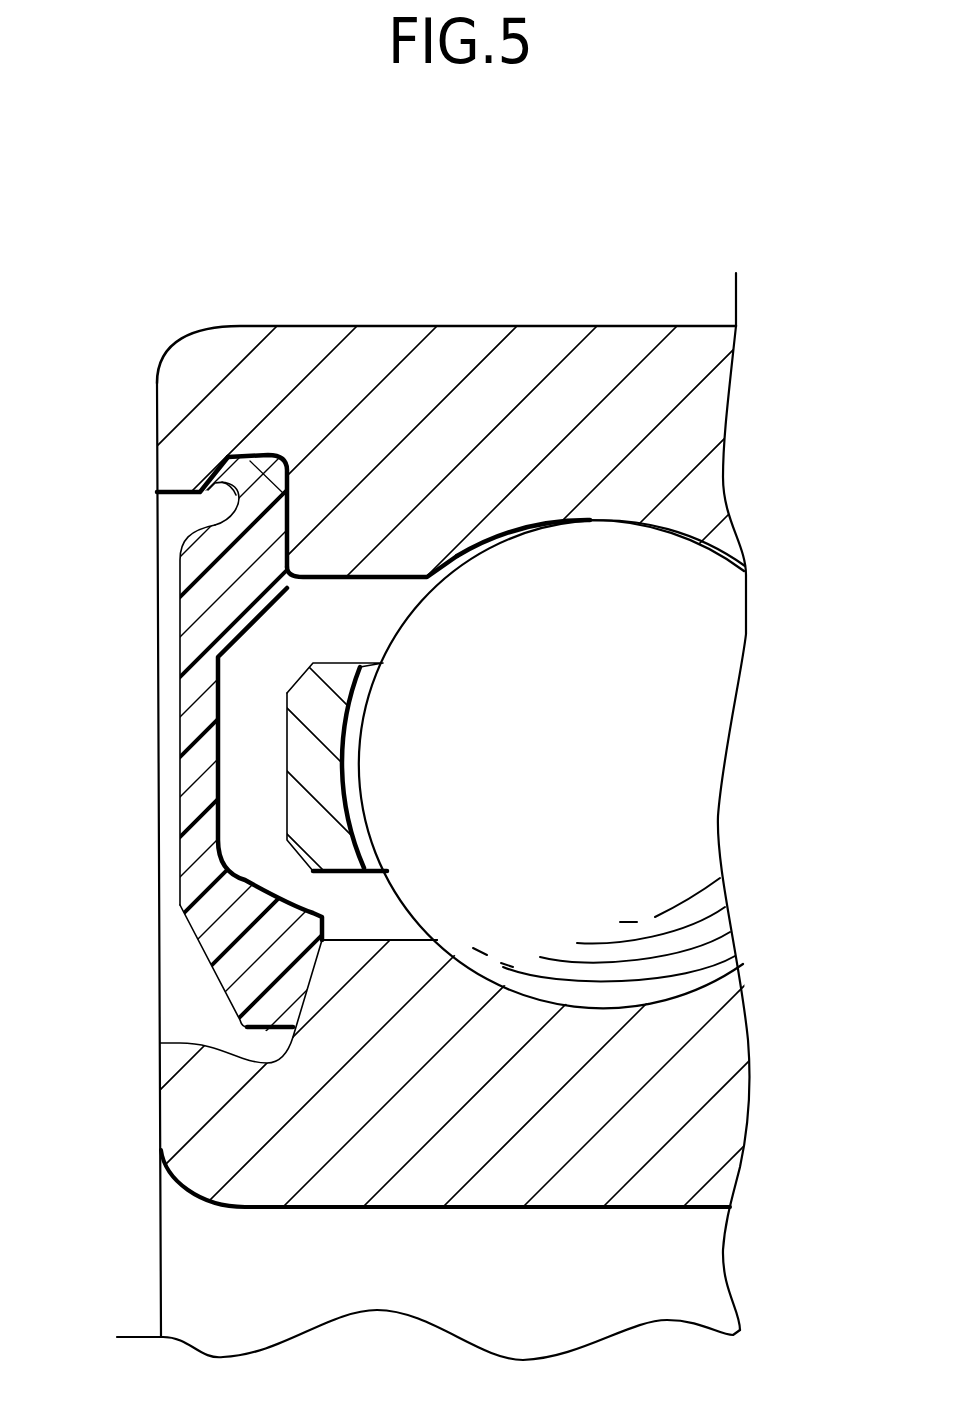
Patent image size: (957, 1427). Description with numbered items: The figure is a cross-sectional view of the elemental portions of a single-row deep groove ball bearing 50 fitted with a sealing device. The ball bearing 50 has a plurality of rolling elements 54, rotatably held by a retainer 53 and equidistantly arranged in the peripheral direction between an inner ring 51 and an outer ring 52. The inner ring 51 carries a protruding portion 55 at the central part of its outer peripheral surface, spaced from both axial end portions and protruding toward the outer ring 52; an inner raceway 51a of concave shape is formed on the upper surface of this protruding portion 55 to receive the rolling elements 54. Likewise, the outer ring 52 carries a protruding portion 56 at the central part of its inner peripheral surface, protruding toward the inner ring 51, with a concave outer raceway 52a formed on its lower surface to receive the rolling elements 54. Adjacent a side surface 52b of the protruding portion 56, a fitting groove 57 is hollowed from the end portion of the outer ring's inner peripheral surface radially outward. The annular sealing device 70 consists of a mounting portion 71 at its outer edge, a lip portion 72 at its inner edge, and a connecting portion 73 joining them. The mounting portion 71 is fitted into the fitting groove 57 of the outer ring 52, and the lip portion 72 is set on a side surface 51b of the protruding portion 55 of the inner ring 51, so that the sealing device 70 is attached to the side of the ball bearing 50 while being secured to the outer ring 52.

The ball bearing 50 is at (327, 298).
The inner ring 51 is at (193, 1102).
The inner raceway 51a is at (547, 1000).
The side surface 51b is at (300, 987).
The outer ring 52 is at (238, 343).
The outer raceway 52a is at (586, 532).
The side surface 52b is at (268, 465).
The retainer 53 is at (303, 755).
The rolling elements 54 is at (666, 769).
The protruding portion 55 is at (420, 1008).
The protruding portion 56 is at (350, 533).
The fitting groove 57 is at (219, 497).
The sealing device 70 is at (178, 654).
The mounting portion 71 is at (247, 510).
The lip portion 72 is at (213, 942).
The connecting portion 73 is at (187, 808).